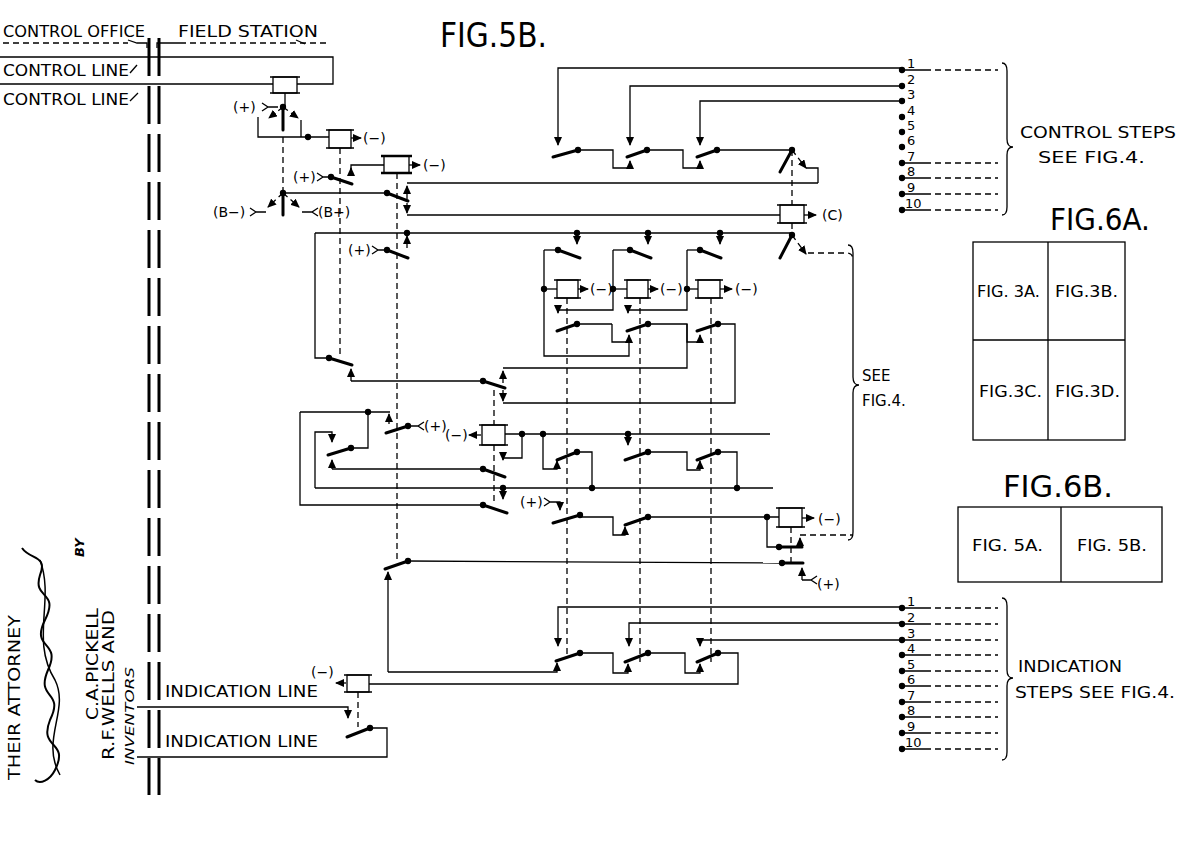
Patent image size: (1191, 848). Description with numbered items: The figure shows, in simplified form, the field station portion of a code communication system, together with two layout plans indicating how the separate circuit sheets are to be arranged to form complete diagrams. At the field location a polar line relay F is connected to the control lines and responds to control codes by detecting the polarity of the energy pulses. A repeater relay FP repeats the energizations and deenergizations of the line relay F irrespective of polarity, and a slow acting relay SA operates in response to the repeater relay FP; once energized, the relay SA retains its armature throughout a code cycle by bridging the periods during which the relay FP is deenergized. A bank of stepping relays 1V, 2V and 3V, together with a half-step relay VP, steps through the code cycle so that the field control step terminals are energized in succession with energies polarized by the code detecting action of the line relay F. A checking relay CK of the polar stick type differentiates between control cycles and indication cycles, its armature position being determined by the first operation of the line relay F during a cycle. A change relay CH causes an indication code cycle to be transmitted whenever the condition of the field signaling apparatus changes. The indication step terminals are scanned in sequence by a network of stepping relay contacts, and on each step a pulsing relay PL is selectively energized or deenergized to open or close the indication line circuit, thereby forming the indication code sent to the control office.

The line relay F is at (289, 76).
The repeater relay FP is at (342, 130).
The slow acting relay SA is at (396, 349).
The checking relay CK is at (792, 192).
The stepping relay 1V is at (567, 458).
The stepping relay 2V is at (637, 462).
The stepping relay 3V is at (709, 462).
The half-step relay VP is at (493, 447).
The change relay CH is at (791, 527).
The pulsing relay PL is at (359, 675).